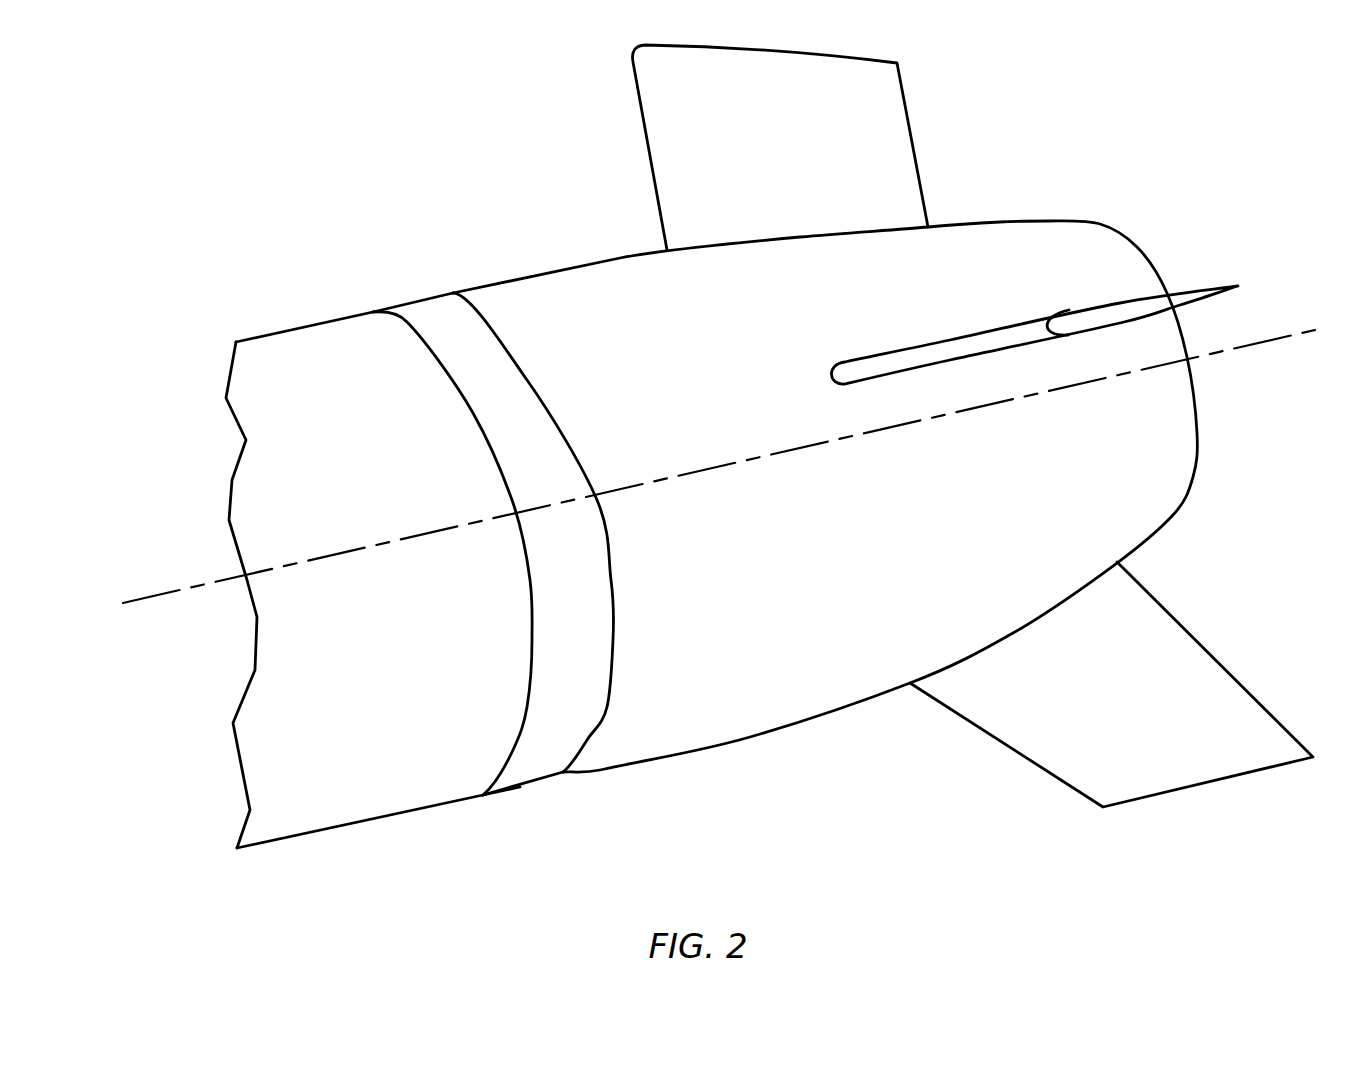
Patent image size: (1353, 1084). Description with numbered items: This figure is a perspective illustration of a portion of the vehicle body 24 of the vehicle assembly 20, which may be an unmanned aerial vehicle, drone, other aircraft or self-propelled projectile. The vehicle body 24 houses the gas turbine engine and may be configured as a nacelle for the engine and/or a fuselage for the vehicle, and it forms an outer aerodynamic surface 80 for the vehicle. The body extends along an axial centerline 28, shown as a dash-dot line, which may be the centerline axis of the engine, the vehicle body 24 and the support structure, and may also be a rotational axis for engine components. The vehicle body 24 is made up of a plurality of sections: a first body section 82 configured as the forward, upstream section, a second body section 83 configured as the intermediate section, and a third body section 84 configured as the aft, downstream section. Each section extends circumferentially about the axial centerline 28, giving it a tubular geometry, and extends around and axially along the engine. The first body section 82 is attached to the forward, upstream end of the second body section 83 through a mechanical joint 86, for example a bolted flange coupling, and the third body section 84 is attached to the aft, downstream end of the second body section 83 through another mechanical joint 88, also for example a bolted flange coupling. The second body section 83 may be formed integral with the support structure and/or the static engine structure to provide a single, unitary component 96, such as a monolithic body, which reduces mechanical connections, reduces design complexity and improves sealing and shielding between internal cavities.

The assembly 20 is at (216, 160).
The vehicle body 24 is at (231, 866).
The axial centerline 28 is at (1292, 340).
The outer aerodynamic surface 80 is at (280, 353).
The first body section 82 is at (403, 828).
The second body section 83 is at (502, 810).
The third body section 84 is at (750, 750).
The mechanical joint 86 is at (366, 304).
The mechanical joint 88 is at (451, 283).
The unitary component 96 is at (544, 798).